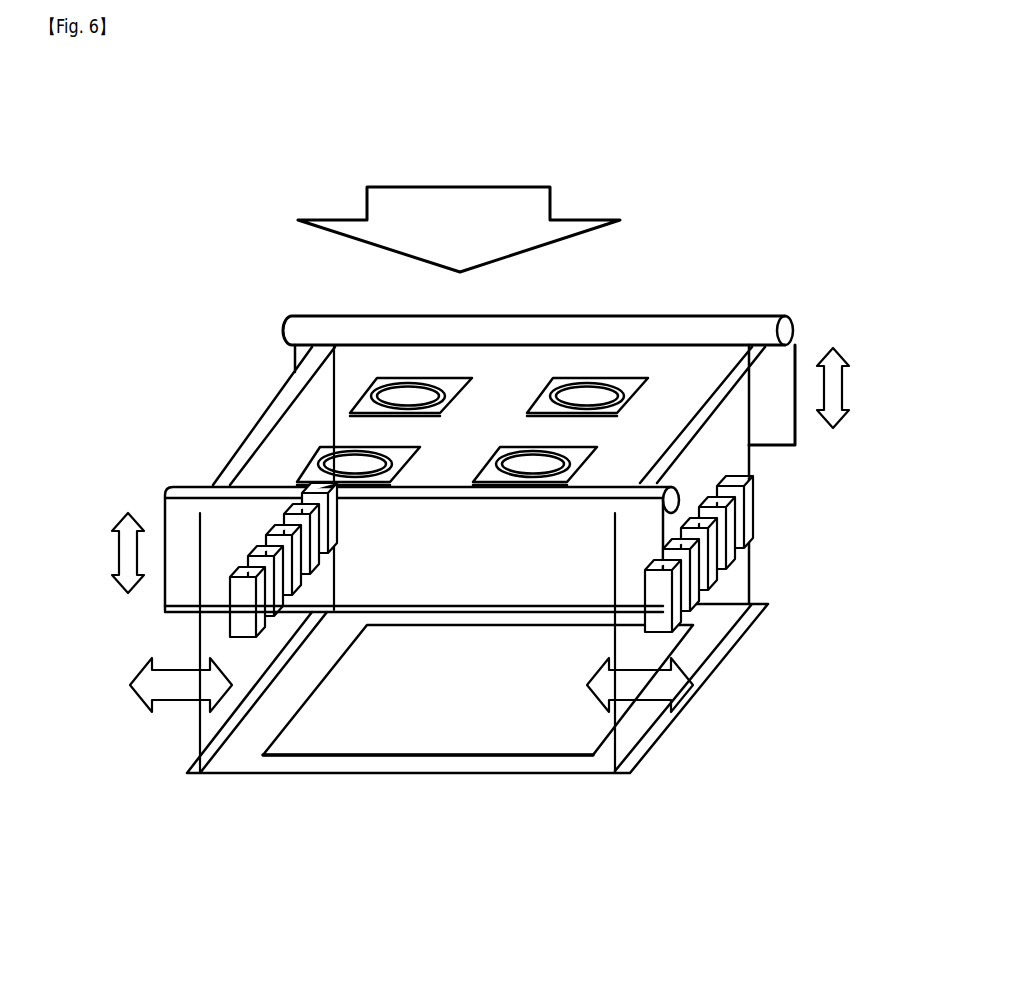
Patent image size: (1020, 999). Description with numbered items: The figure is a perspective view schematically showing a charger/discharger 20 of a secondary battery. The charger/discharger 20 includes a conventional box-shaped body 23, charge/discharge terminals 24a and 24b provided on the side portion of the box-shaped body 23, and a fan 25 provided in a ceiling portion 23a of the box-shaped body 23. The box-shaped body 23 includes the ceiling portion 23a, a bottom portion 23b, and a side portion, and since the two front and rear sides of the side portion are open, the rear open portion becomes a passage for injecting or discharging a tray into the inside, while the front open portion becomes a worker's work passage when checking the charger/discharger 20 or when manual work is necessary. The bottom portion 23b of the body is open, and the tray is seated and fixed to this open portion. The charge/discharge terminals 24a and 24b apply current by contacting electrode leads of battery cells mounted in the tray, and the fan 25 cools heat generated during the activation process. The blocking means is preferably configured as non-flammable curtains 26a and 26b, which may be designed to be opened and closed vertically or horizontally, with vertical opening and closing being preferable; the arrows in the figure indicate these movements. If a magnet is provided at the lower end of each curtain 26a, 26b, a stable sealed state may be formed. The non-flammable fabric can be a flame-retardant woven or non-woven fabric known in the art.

The charger/discharger 20 is at (475, 475).
The box-shaped body 23 is at (244, 418).
The ceiling portion 23a is at (698, 368).
The bottom portion 23b is at (562, 763).
The charge/discharge terminal 24a is at (243, 637).
The charge/discharge terminal 24b is at (723, 572).
The fan 25 is at (620, 383).
The non-flammable curtain 26a is at (172, 596).
The non-flammable curtain 26b is at (783, 412).